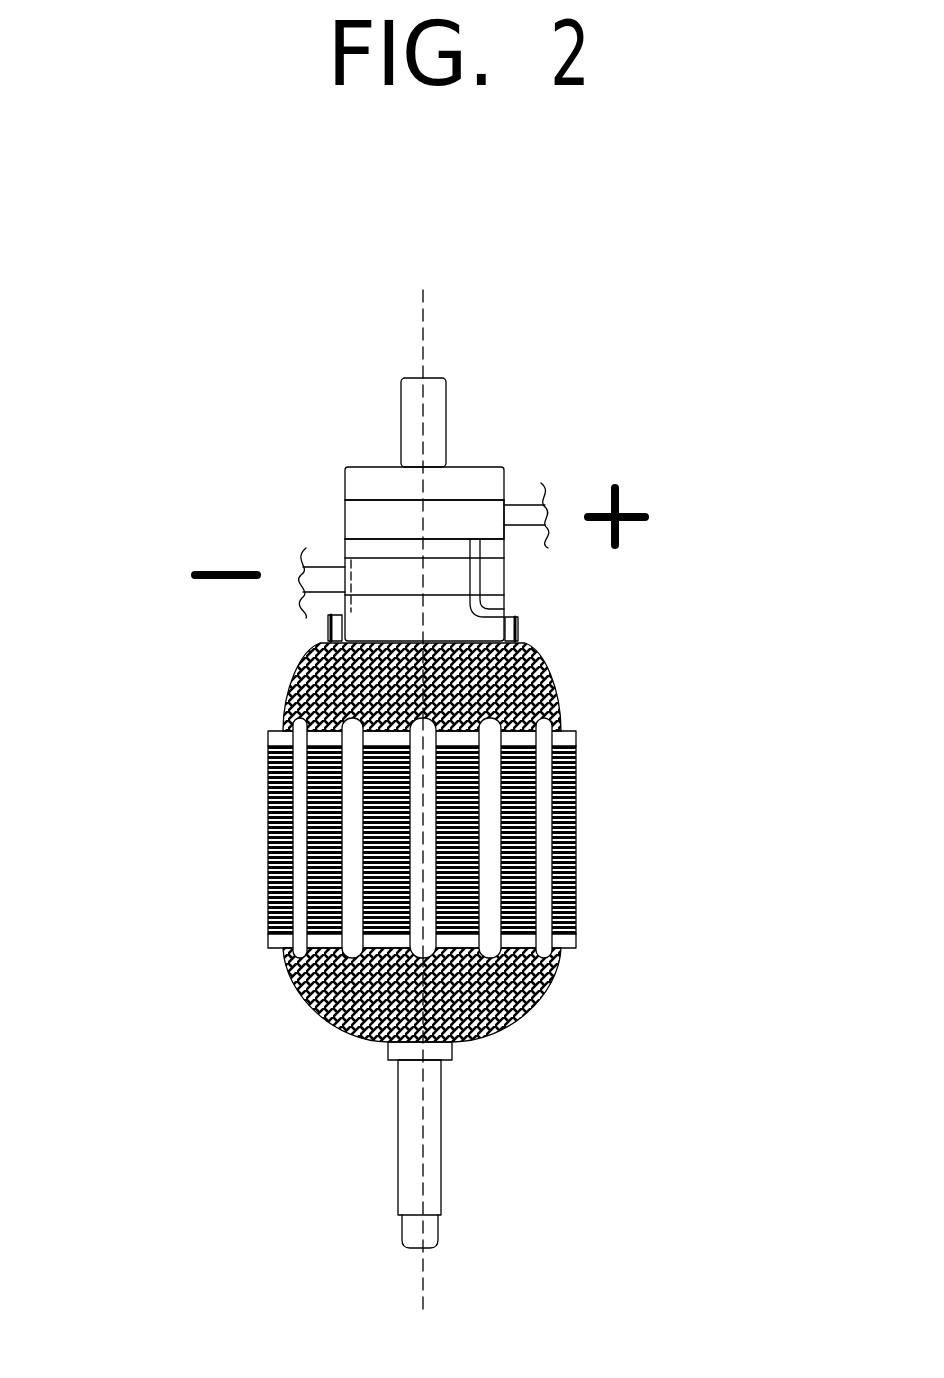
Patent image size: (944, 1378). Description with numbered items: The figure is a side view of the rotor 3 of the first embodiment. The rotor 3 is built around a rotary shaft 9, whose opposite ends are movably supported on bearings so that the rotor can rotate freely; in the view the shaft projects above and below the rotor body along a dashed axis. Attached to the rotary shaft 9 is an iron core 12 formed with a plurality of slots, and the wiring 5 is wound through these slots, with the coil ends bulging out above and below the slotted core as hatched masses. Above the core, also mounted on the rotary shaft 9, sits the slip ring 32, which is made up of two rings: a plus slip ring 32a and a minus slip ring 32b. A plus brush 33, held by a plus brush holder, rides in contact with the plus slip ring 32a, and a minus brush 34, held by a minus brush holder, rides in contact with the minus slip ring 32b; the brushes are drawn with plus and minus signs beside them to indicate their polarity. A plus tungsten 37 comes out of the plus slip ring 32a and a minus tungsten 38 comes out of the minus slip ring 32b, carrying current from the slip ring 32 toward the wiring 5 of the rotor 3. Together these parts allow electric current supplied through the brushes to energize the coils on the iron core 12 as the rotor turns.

The rotor 3 is at (397, 793).
The wiring 5 is at (563, 713).
The rotary shaft 9 is at (432, 1122).
The iron core 12 is at (572, 847).
The slip ring 32 is at (397, 563).
The plus slip ring 32a is at (458, 520).
The minus slip ring 32b is at (325, 613).
The plus brush 33 is at (525, 507).
The minus brush 34 is at (323, 563).
The plus tungsten 37 is at (518, 633).
The minus tungsten 38 is at (382, 575).